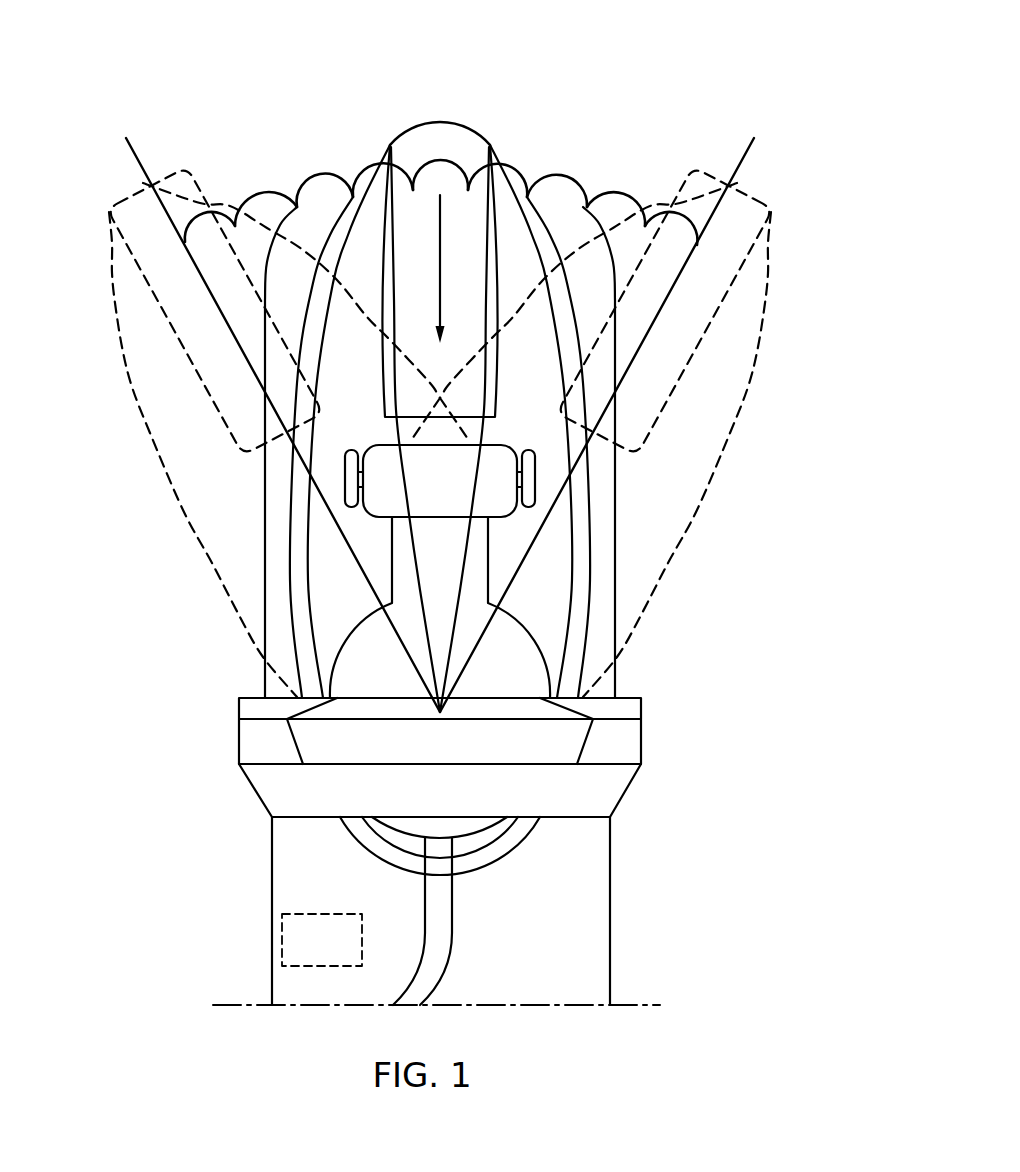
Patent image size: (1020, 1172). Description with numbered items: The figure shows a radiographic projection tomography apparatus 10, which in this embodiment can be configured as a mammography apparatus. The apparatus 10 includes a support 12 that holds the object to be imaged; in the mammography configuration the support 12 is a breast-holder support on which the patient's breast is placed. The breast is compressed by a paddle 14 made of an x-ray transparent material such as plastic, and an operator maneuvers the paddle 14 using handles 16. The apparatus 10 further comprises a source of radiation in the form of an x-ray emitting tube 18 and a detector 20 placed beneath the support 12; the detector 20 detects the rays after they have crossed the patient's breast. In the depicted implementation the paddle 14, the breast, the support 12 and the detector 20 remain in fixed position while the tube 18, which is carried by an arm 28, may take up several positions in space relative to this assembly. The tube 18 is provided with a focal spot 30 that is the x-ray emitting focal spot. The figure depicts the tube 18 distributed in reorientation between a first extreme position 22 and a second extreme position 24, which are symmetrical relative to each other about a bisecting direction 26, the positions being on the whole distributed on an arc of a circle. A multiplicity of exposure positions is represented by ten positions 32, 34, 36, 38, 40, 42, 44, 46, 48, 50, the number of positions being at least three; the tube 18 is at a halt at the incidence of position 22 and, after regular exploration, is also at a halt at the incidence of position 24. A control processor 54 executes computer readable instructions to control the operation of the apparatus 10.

The radiographic projection tomography apparatus 10 is at (656, 56).
The support 12 is at (557, 720).
The paddle 14 is at (517, 509).
The handles 16 is at (533, 467).
The x-ray emitting tube 18 is at (470, 283).
The detector 20 is at (523, 754).
The first extreme position 22 is at (126, 142).
The second extreme position 24 is at (757, 143).
The bisecting direction 26 is at (400, 170).
The arm 28 is at (310, 597).
The focal spot 30 is at (442, 160).
The exposure position 32 is at (182, 254).
The exposure position 34 is at (208, 232).
The exposure position 36 is at (283, 212).
The exposure position 38 is at (350, 193).
The exposure position 40 is at (383, 168).
The exposure position 42 is at (497, 195).
The exposure position 44 is at (527, 200).
The exposure position 46 is at (612, 210).
The exposure position 48 is at (664, 237).
The exposure position 50 is at (694, 253).
The control processor 54 is at (282, 945).